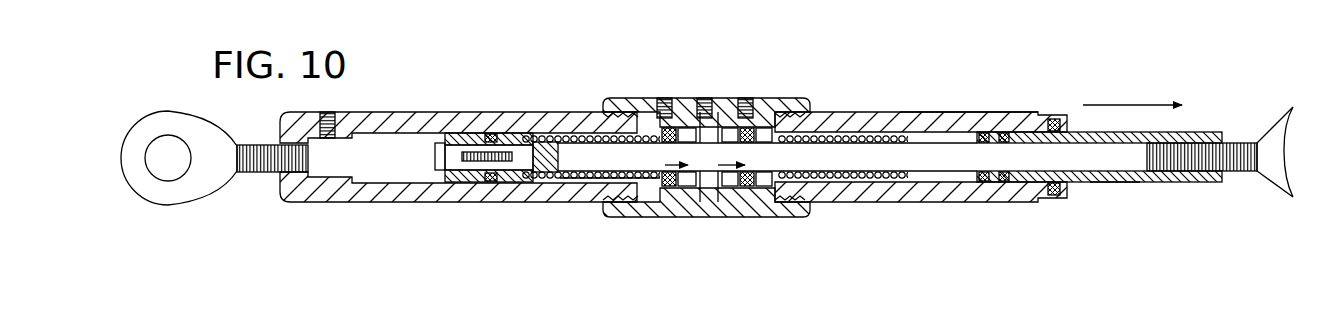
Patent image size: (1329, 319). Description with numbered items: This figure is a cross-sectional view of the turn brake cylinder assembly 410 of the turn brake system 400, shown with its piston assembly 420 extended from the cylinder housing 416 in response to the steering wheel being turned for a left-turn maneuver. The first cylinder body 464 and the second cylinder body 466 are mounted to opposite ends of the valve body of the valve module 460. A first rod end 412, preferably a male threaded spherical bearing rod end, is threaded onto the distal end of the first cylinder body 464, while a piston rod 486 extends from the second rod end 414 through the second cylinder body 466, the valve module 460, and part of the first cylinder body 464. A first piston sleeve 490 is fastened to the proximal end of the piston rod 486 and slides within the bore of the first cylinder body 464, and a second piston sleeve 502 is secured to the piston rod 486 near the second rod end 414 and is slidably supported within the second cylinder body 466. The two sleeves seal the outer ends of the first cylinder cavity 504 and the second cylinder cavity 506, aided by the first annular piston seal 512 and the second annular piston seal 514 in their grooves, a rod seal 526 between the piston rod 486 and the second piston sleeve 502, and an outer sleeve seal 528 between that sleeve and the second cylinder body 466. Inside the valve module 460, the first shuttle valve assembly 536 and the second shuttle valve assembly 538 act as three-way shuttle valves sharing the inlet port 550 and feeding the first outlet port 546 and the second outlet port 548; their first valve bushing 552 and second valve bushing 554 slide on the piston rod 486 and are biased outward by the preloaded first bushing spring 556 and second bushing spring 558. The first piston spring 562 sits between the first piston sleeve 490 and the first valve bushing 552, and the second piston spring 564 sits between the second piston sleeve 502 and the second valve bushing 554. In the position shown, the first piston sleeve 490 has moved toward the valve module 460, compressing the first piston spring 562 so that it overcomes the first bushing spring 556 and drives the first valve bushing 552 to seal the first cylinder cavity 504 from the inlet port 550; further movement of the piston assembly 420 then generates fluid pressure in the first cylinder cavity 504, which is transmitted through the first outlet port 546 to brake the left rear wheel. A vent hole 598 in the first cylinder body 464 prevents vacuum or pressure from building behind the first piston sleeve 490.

The turn brake system 400 is at (1131, 75).
The turn brake cylinder assembly 410 is at (1019, 82).
The first rod end 412 is at (168, 118).
The second rod end 414 is at (1272, 137).
The cylinder housing 416 is at (965, 112).
The piston assembly 420 is at (1124, 194).
The valve module 460 is at (798, 82).
The first cylinder body 464 is at (408, 114).
The second cylinder body 466 is at (902, 120).
The piston rod 486 is at (1135, 166).
The first piston sleeve 490 is at (510, 133).
The second piston sleeve 502 is at (1080, 182).
The first cylinder cavity 504 is at (582, 136).
The second cylinder cavity 506 is at (845, 136).
The first annular piston seal 512 is at (492, 181).
The second annular piston seal 514 is at (1052, 194).
The rod seal 526 is at (984, 183).
The outer sleeve seal 528 is at (1055, 119).
The first shuttle valve assembly 536 is at (672, 194).
The second shuttle valve assembly 538 is at (742, 191).
The first outlet port 546 is at (662, 100).
The second outlet port 548 is at (745, 98).
The inlet port 550 is at (705, 98).
The first valve bushing 552 is at (675, 188).
The second valve bushing 554 is at (768, 197).
The first bushing spring 556 is at (690, 187).
The second bushing spring 558 is at (724, 193).
The first piston spring 562 is at (568, 180).
The second piston spring 564 is at (845, 180).
The vent hole 598 is at (330, 86).